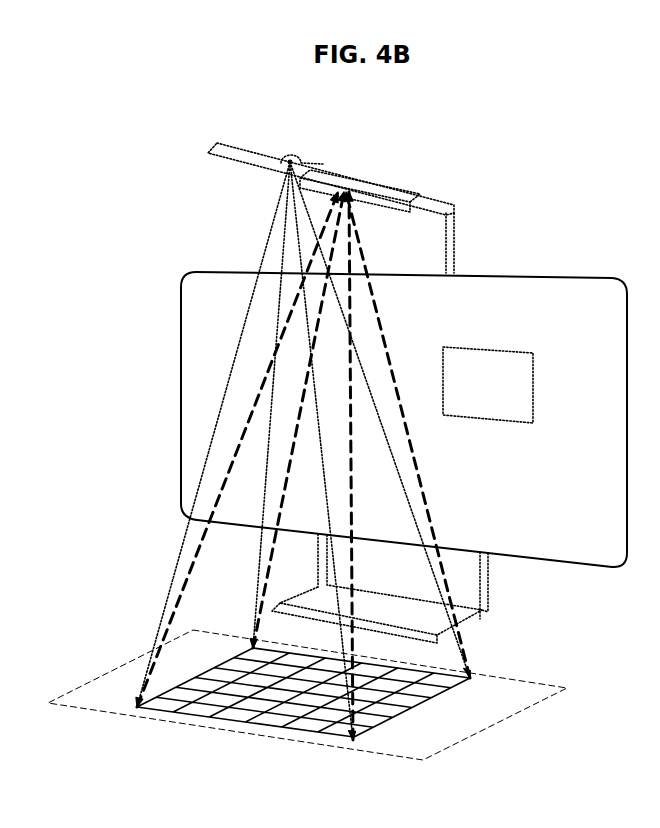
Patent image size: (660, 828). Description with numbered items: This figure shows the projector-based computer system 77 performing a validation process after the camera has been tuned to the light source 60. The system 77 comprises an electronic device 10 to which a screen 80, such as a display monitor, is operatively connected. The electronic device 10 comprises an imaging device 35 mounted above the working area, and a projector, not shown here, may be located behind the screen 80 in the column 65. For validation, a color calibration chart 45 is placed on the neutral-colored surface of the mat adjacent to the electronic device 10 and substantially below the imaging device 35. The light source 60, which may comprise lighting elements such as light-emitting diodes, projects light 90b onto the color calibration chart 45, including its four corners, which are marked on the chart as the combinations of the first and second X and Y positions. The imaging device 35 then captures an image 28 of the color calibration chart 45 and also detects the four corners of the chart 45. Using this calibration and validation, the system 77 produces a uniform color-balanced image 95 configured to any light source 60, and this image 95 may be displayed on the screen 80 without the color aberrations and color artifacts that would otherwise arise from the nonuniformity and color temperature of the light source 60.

The electronic device 10 is at (464, 243).
The image 28 is at (370, 255).
The imaging device 35 is at (372, 182).
The color calibration chart 45 is at (268, 731).
The light source 60 is at (293, 160).
The column 65 is at (262, 158).
The projector-based computer system 77 is at (116, 215).
The screen 80 is at (572, 280).
The light 90b is at (264, 238).
The uniform color-balanced image 95 is at (516, 350).